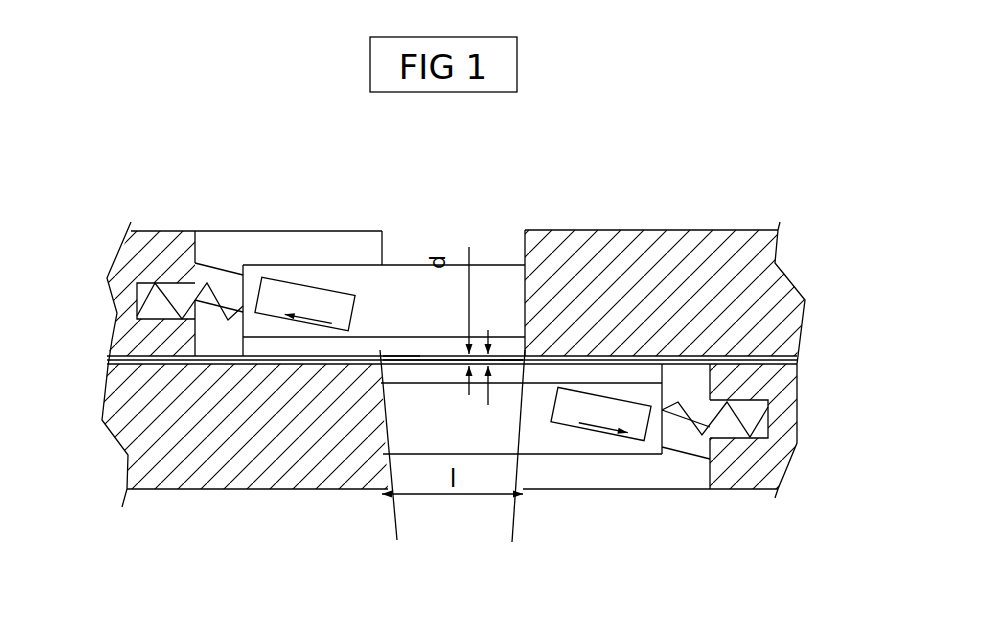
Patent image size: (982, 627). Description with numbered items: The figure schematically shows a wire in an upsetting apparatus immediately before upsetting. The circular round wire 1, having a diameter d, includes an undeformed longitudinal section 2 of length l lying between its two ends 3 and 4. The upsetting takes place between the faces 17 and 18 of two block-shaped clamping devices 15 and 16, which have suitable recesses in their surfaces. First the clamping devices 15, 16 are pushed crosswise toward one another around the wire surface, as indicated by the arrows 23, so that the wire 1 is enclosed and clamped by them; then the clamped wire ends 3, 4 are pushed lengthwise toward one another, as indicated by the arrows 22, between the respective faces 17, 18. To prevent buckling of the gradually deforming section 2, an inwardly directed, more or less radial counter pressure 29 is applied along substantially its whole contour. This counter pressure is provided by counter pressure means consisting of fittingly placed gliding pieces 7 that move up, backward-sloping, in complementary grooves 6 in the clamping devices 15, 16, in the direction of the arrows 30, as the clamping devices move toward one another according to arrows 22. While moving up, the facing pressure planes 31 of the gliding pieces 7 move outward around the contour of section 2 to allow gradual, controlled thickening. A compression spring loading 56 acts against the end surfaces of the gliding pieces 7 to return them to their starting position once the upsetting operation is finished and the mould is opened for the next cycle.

The wire 1 is at (441, 334).
The undeformed longitudinal section 2 is at (453, 263).
The wire end 3 is at (390, 264).
The wire end 4 is at (543, 264).
The grooves 6 is at (210, 278).
The gliding pieces 7 is at (441, 393).
The clamping device 15 is at (491, 313).
The clamping device 16 is at (491, 313).
The face of clamping device 17 is at (374, 459).
The face of clamping device 18 is at (500, 459).
The arrows 22 is at (373, 222).
The arrows 23 is at (139, 172).
The counter pressure 29 is at (527, 270).
The arrows 30 is at (453, 358).
The pressure planes 31 is at (449, 407).
The compression spring loading 56 is at (458, 343).